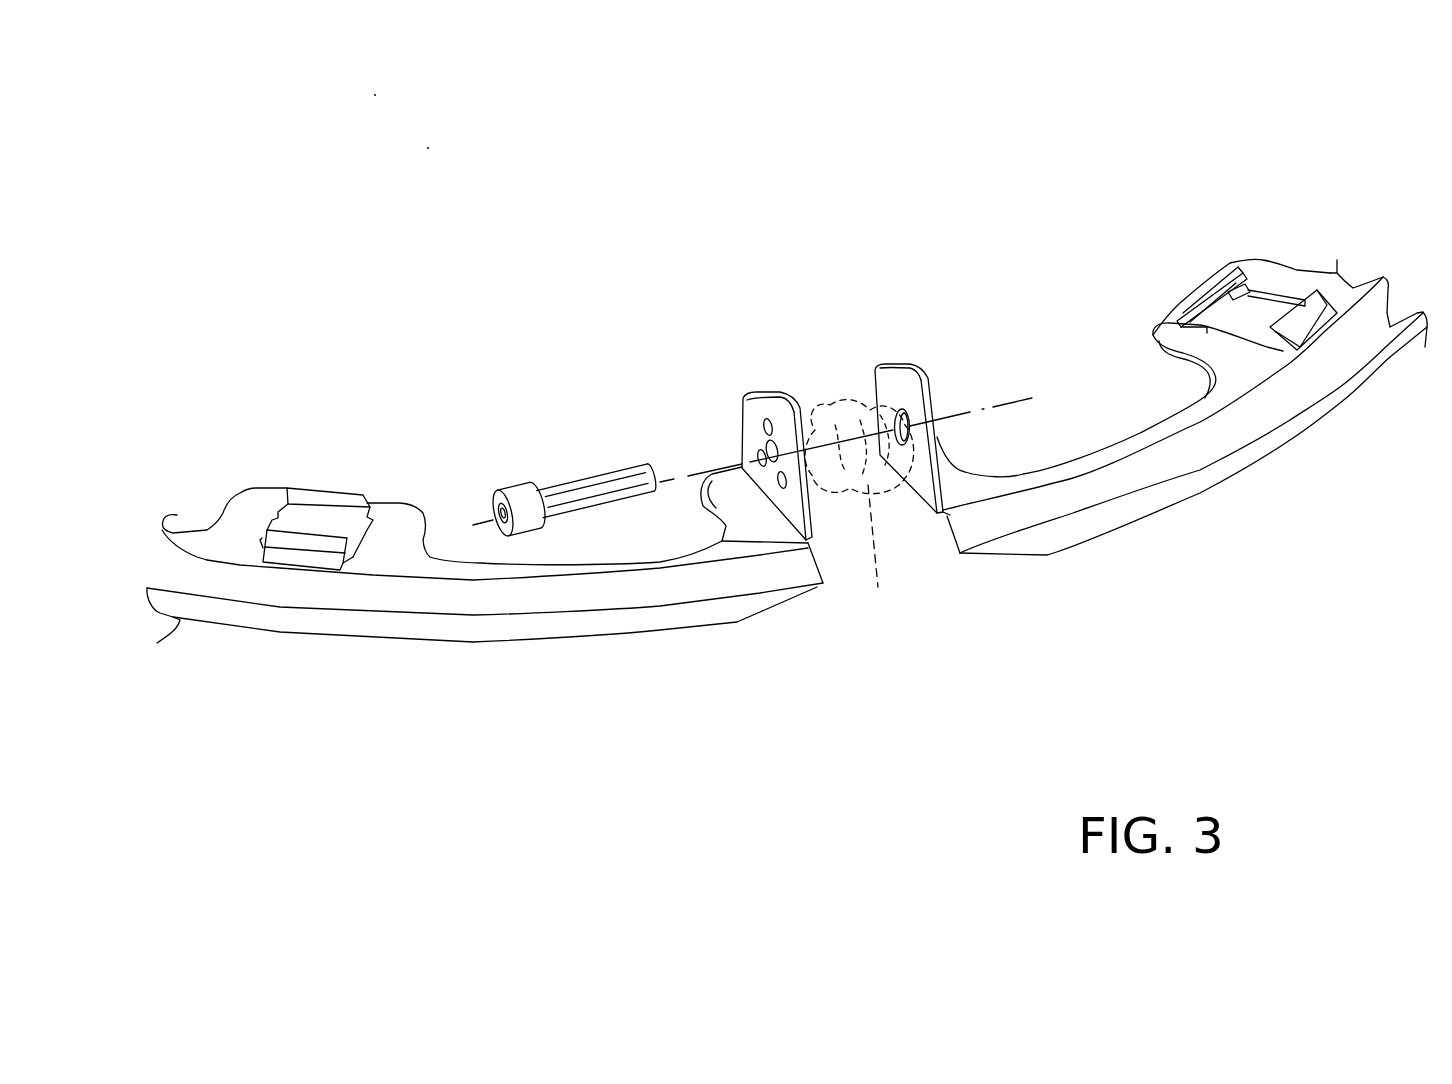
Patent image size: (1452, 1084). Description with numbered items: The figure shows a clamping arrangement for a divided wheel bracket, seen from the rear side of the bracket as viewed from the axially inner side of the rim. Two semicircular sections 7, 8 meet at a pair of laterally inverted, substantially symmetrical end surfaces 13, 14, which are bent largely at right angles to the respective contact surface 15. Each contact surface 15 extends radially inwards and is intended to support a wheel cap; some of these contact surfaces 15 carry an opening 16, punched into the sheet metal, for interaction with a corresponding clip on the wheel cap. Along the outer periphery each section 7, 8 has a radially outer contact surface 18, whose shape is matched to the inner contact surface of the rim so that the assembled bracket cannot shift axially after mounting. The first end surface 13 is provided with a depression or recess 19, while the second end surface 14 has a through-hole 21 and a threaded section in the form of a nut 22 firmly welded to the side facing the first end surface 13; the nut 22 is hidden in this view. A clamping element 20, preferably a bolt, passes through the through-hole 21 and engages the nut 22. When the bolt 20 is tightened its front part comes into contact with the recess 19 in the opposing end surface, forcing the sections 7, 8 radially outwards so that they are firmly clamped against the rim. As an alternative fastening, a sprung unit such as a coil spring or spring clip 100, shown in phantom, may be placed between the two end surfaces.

The section 7 is at (1232, 500).
The section 8 is at (490, 652).
The first end surface 13 is at (877, 393).
The second end surface 14 is at (798, 391).
The contact surface 15 is at (407, 517).
The opening 16 is at (280, 510).
The radially outer contact surface 18 is at (1103, 525).
The recess 19 is at (897, 480).
The clamping element 20 is at (587, 480).
The through-hole 21 is at (743, 413).
The nut 22 is at (845, 493).
The spring clip 100 is at (859, 508).